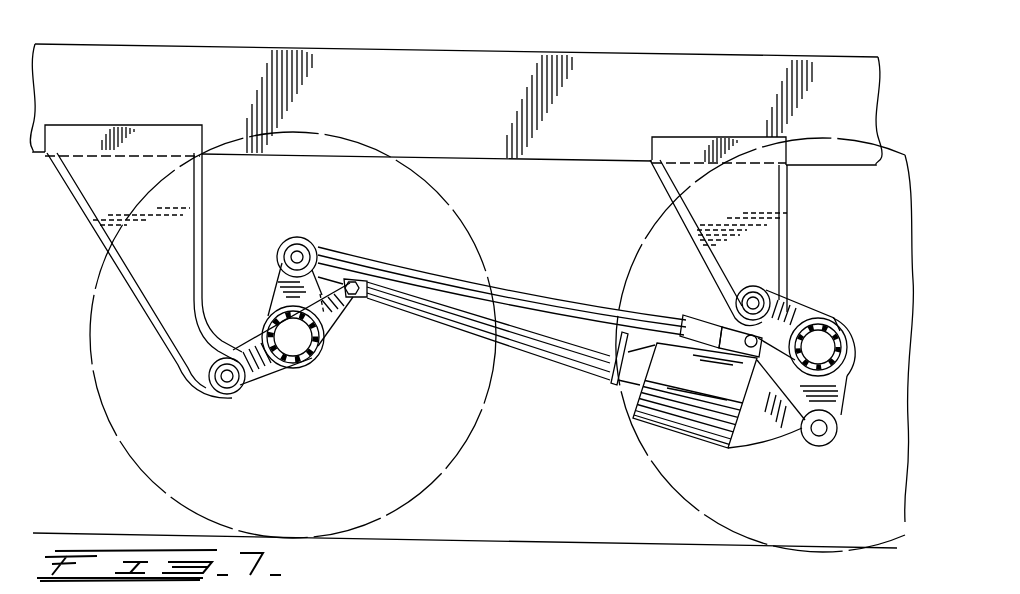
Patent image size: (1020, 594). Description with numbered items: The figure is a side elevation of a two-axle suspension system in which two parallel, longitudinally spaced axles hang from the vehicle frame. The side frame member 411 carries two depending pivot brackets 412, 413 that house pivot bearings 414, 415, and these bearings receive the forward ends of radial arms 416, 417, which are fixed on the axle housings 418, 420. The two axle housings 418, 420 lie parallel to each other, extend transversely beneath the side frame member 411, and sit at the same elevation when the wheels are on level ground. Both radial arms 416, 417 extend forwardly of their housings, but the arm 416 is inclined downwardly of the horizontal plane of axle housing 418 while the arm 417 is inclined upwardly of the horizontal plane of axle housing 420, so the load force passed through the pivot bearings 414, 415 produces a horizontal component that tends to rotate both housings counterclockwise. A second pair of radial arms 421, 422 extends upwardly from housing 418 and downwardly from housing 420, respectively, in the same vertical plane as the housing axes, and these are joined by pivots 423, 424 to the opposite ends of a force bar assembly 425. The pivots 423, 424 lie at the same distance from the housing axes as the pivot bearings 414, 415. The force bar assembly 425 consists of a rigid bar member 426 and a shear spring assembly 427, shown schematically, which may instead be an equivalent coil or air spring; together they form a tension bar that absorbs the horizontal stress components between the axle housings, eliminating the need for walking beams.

The side frame member 411 is at (590, 158).
The pivot bracket 412 is at (195, 183).
The pivot bracket 413 is at (783, 198).
The pivot bearing 414 is at (214, 392).
The pivot bearing 415 is at (750, 303).
The radial arm 416 is at (263, 378).
The radial arm 417 is at (795, 310).
The axle housing 418 is at (320, 343).
The axle housing 420 is at (840, 328).
The radial arm 421 is at (277, 284).
The radial arm 422 is at (838, 389).
The pivot 423 is at (298, 252).
The pivot 424 is at (828, 440).
The force bar assembly 425 is at (452, 315).
The rigid bar member 426 is at (538, 345).
The shear spring assembly 427 is at (698, 424).